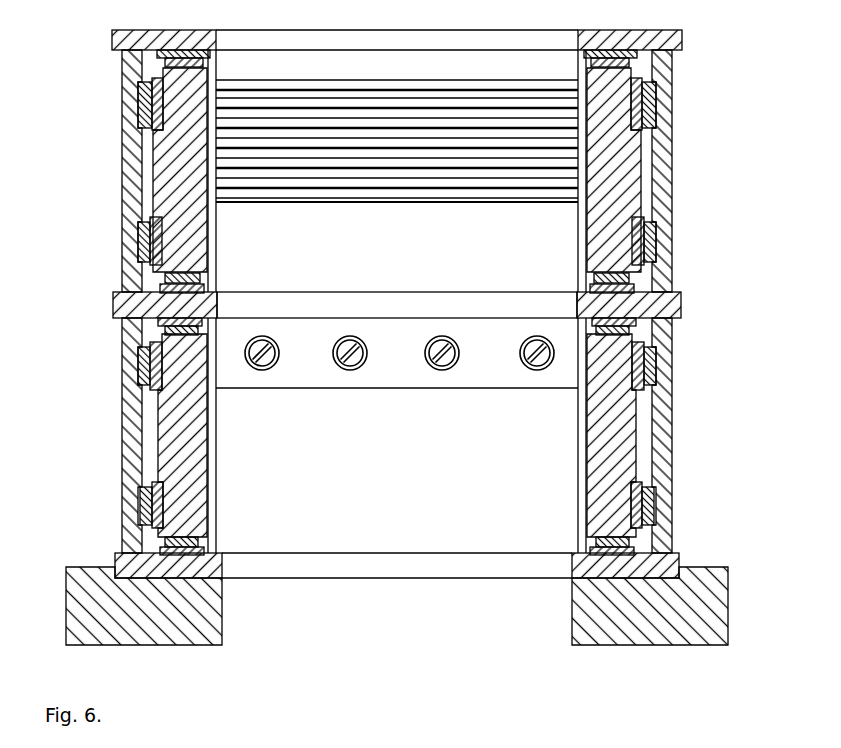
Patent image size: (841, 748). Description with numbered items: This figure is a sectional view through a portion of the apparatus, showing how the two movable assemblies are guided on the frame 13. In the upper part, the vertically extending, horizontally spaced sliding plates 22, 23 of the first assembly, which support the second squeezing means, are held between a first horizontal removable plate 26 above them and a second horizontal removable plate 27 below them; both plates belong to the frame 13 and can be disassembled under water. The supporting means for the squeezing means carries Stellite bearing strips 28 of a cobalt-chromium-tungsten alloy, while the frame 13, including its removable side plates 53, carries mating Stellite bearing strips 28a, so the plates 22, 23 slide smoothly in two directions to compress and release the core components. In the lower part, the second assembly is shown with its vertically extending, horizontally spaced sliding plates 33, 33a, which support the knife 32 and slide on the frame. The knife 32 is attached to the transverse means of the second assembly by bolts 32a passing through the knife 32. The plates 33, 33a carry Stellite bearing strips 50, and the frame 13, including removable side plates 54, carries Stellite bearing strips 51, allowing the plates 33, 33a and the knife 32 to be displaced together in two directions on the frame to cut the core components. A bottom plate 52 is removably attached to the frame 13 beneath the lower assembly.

The frame 13 is at (727, 567).
The sliding plate 22 is at (208, 232).
The sliding plate 23 is at (588, 230).
The first horizontal removable plate 26 is at (182, 47).
The second horizontal removable plate 27 is at (213, 291).
The bearing strips 28 is at (200, 62).
The bearing strips 28a is at (173, 55).
The knife 32 is at (408, 385).
The bolts 32a is at (262, 372).
The sliding plate 33 is at (208, 471).
The sliding plate 33a is at (590, 473).
The bearing strips 50 is at (150, 350).
The bearing strips 51 is at (158, 325).
The bottom plate 52 is at (222, 578).
The removable side plates 53 is at (125, 181).
The removable side plates 54 is at (125, 453).